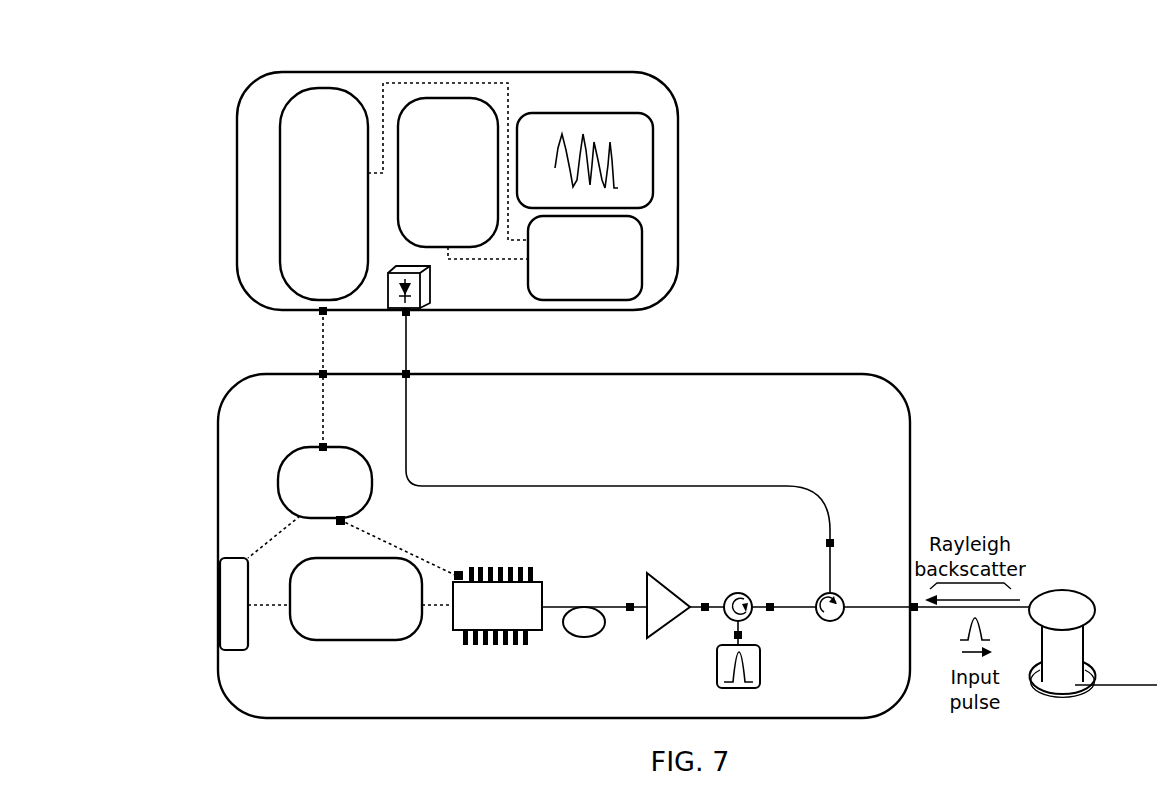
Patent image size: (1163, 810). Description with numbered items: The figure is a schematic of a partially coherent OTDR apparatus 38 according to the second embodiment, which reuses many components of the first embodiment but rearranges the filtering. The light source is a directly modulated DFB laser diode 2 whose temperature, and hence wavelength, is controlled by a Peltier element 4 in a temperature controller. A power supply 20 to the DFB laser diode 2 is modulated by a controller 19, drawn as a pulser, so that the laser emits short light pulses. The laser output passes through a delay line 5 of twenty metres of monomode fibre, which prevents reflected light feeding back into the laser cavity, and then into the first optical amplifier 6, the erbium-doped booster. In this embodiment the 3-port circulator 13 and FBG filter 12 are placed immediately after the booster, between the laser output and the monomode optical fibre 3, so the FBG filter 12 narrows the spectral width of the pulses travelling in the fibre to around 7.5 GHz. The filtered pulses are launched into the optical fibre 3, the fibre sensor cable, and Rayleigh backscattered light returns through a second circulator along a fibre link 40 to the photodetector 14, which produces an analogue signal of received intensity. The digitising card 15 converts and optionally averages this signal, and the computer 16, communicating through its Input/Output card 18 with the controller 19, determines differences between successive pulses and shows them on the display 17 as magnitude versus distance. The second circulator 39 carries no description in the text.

The DFB laser diode 2 is at (463, 638).
The monomode optical fibre 3 is at (1092, 587).
The Peltier element 4 is at (355, 640).
The delay line 5 is at (590, 615).
The first optical amplifier 6 is at (650, 640).
The FBG filter 12 is at (760, 665).
The 3-port circulator 13 is at (730, 620).
The photodetector 14 is at (396, 313).
The digitising card 15 is at (446, 98).
The computer 16 is at (642, 260).
The display 17 is at (653, 165).
The Input/Output card 18 is at (320, 88).
The controller 19 is at (278, 489).
The power supply 20 is at (234, 650).
The partially coherent OTDR apparatus 38 is at (870, 205).
The circulator 39 is at (842, 596).
The optical fibre link 40 is at (634, 486).